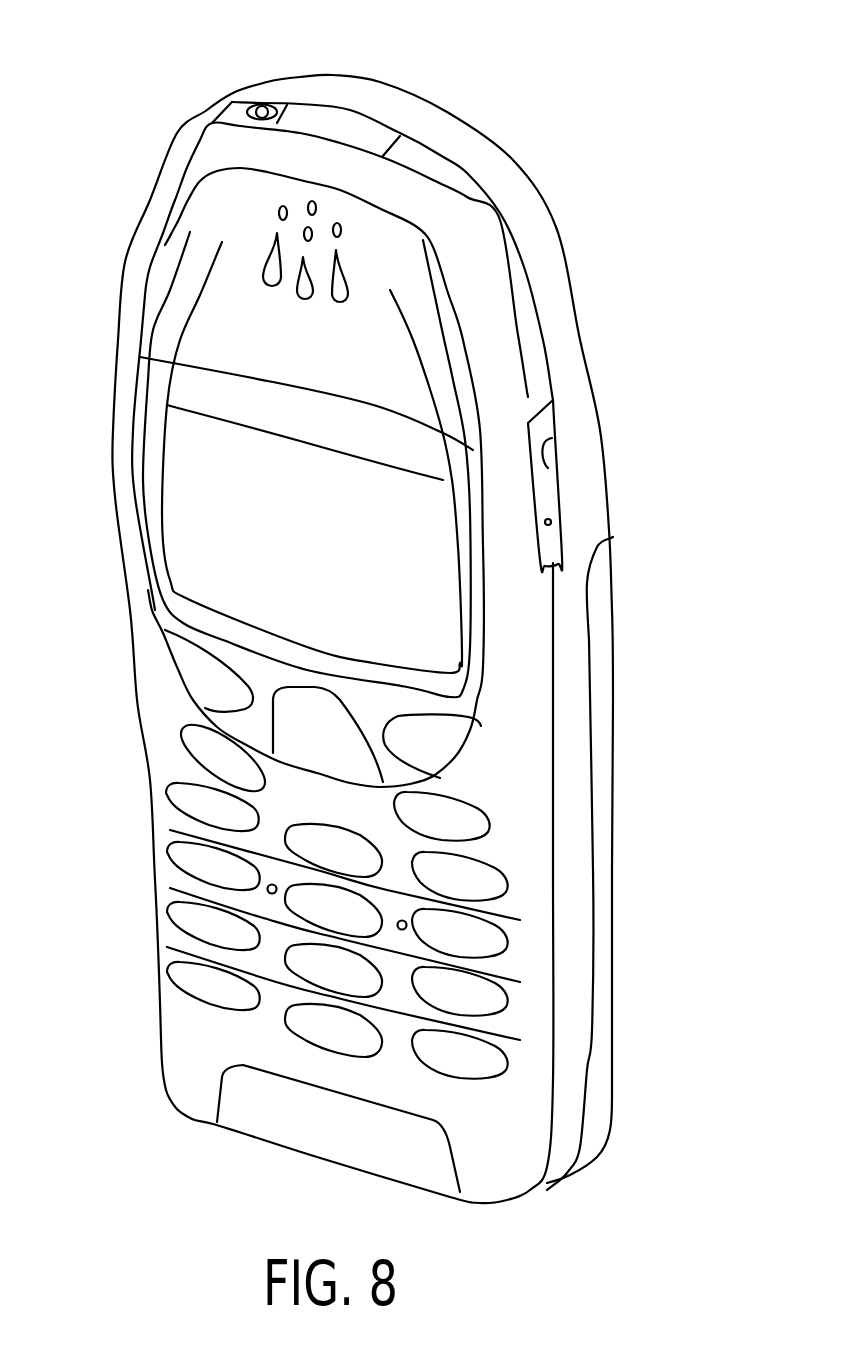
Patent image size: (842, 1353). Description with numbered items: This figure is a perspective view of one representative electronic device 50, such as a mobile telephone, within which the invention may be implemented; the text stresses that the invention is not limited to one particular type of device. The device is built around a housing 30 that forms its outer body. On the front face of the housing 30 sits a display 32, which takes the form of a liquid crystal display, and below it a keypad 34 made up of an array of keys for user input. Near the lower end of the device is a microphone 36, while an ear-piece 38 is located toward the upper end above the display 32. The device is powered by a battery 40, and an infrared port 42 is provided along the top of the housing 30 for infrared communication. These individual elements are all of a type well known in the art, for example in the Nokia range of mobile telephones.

The housing 30 is at (573, 303).
The display 32 is at (425, 597).
The keypad 34 is at (458, 1062).
The microphone 36 is at (252, 1115).
The ear-piece 38 is at (292, 245).
The battery 40 is at (600, 1033).
The infrared port 42 is at (338, 123).
The electronic device 50 is at (390, 644).